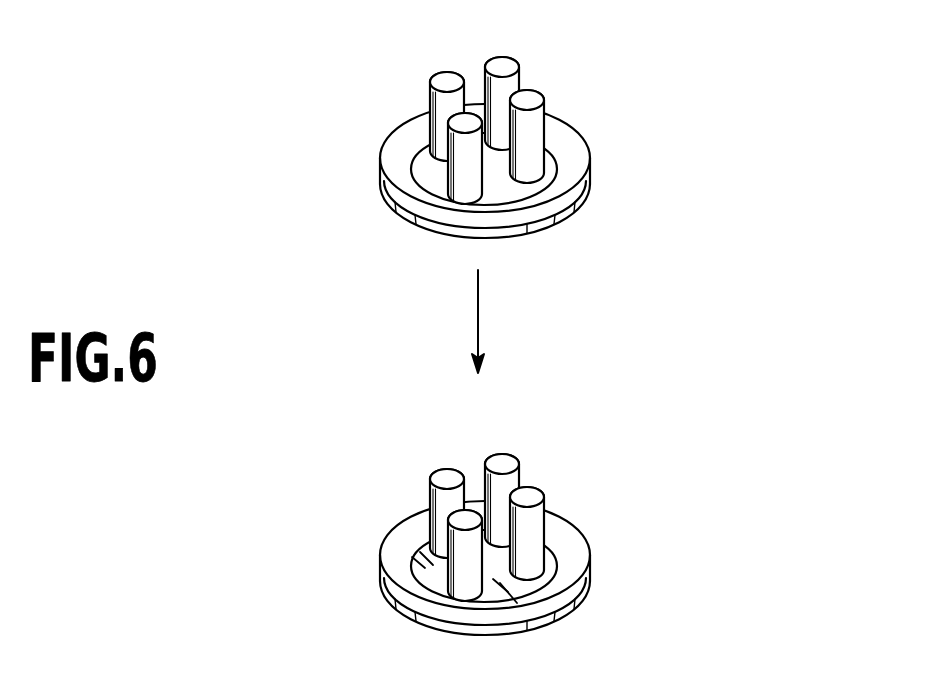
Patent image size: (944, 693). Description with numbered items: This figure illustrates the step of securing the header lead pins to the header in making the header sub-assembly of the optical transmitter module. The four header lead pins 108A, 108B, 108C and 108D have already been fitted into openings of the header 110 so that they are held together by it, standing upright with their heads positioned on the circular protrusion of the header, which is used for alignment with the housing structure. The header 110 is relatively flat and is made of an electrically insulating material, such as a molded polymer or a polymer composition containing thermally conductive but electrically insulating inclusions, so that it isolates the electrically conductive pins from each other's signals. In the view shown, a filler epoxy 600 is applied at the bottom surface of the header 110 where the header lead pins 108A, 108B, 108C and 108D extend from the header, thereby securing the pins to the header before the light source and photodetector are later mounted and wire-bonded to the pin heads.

The header lead pin 108A is at (545, 124).
The header lead pin 108B is at (505, 57).
The header lead pin 108C is at (428, 97).
The header lead pin 108D is at (450, 178).
The header 110 is at (543, 225).
The filler epoxy 600 is at (428, 547).